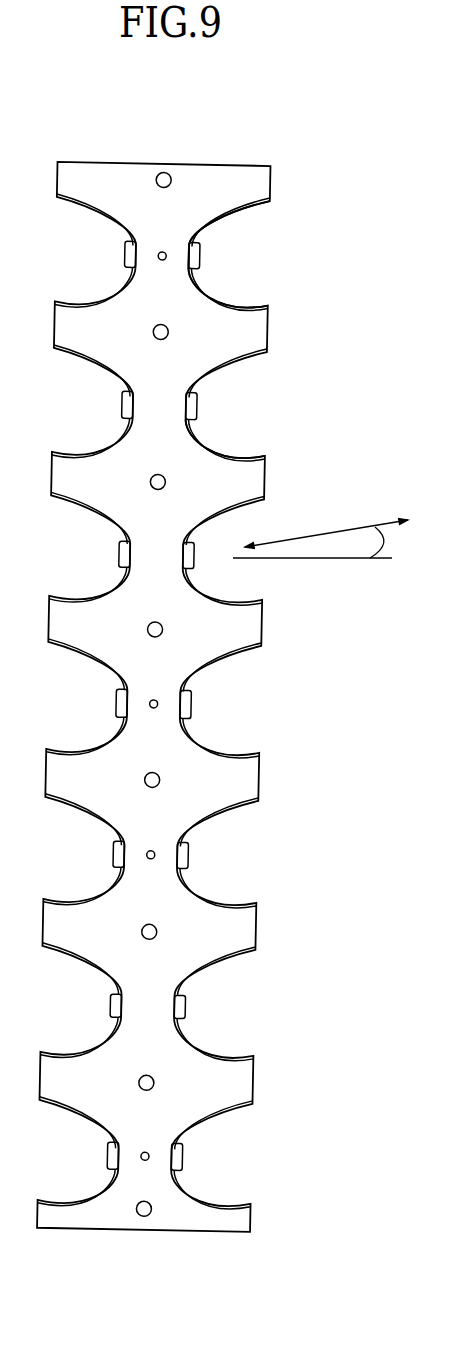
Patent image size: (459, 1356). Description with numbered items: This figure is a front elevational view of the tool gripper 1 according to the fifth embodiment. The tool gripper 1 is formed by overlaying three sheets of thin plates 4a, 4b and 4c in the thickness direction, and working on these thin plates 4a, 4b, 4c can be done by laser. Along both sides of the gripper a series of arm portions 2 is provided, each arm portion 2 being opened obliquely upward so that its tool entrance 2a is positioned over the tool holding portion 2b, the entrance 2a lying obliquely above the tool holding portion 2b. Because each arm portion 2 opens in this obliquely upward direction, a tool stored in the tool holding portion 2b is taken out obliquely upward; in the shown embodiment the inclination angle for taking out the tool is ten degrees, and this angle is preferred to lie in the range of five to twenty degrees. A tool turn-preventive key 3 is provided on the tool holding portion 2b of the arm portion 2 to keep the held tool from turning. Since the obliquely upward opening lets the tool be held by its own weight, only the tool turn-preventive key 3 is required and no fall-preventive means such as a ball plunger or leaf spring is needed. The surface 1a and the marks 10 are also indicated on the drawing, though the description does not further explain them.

The tool gripper 1 is at (230, 140).
The arm portion 2 is at (238, 263).
The tool entrance 2a is at (266, 206).
The tool holding portion 2b is at (210, 295).
The tool turn-preventive key 3 is at (195, 403).
The edge surface of plate 1a is at (230, 453).
The thin plate 4a is at (172, 493).
The thin plate 4b is at (227, 441).
The thin plate 4c is at (88, 547).
The section line X-X 10 is at (36, 703).